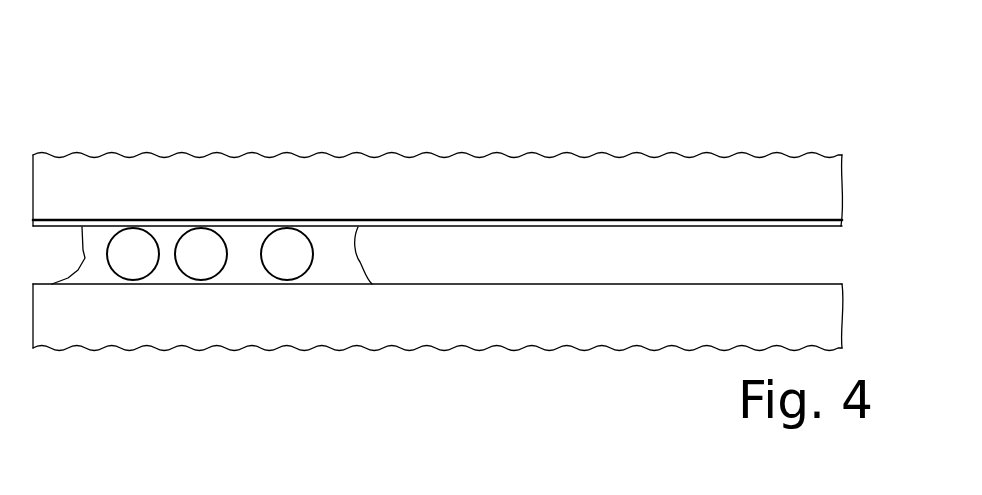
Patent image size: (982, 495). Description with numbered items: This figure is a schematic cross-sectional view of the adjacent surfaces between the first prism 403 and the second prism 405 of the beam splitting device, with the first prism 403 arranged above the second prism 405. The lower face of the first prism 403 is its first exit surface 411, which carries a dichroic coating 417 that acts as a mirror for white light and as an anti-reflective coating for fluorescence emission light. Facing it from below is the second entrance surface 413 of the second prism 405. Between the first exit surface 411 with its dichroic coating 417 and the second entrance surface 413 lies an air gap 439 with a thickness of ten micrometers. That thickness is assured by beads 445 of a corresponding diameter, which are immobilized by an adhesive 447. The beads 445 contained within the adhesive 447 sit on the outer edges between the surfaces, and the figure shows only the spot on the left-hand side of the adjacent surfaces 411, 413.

The first prism 403 is at (375, 195).
The second prism 405 is at (300, 332).
The first exit surface 411 is at (619, 220).
The second entrance surface 413 is at (618, 285).
The dichroic coating 417 is at (765, 222).
The air gap 439 is at (752, 258).
The beads 445 is at (213, 258).
The adhesive 447 is at (97, 272).